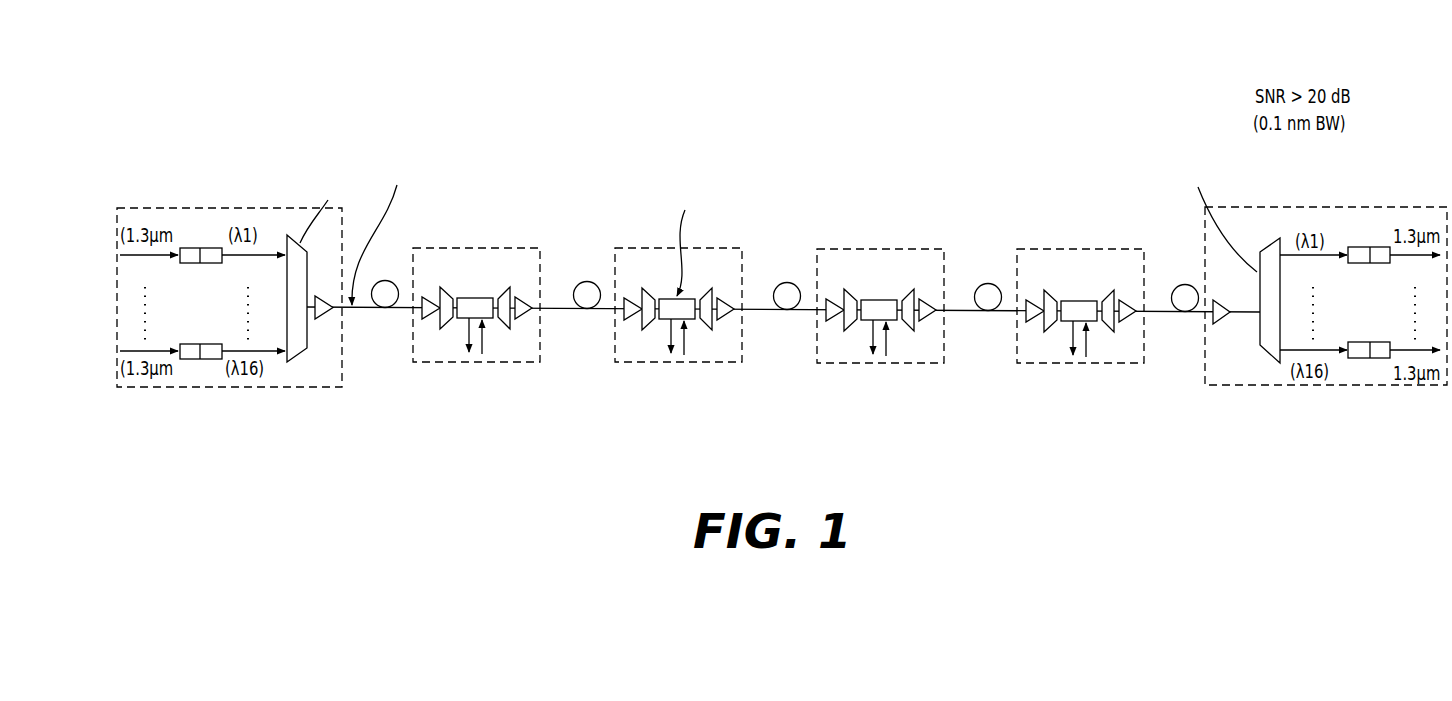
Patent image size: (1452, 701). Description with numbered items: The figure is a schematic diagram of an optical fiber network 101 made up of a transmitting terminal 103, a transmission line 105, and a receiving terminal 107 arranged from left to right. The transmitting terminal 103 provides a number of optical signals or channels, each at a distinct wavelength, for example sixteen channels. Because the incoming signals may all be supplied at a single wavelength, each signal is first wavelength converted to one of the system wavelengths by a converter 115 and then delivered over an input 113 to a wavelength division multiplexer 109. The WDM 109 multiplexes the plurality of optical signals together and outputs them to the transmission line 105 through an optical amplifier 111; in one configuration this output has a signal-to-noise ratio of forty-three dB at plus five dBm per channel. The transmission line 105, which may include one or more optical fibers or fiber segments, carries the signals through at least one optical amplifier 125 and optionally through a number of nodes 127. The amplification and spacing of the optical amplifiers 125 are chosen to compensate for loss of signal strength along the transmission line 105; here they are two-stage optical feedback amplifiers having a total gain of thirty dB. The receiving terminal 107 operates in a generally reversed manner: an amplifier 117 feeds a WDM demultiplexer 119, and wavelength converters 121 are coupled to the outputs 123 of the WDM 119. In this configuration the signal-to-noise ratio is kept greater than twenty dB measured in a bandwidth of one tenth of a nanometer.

The optical fiber network 101 is at (1062, 78).
The transmitting terminal 103 is at (133, 210).
The transmission line 105 is at (365, 307).
The receiving terminal 107 is at (1397, 220).
The wavelength division multiplexer 109 is at (300, 352).
The optical amplifier 111 is at (323, 319).
The input 113 is at (285, 255).
The converter 115 is at (190, 252).
The amplifier 117 is at (1222, 324).
The WDM demultiplexer 119 is at (1263, 342).
The wavelength converter 121 is at (1357, 255).
The output 123 is at (1283, 247).
The optical amplifier 125 is at (385, 295).
The node 127 is at (453, 258).